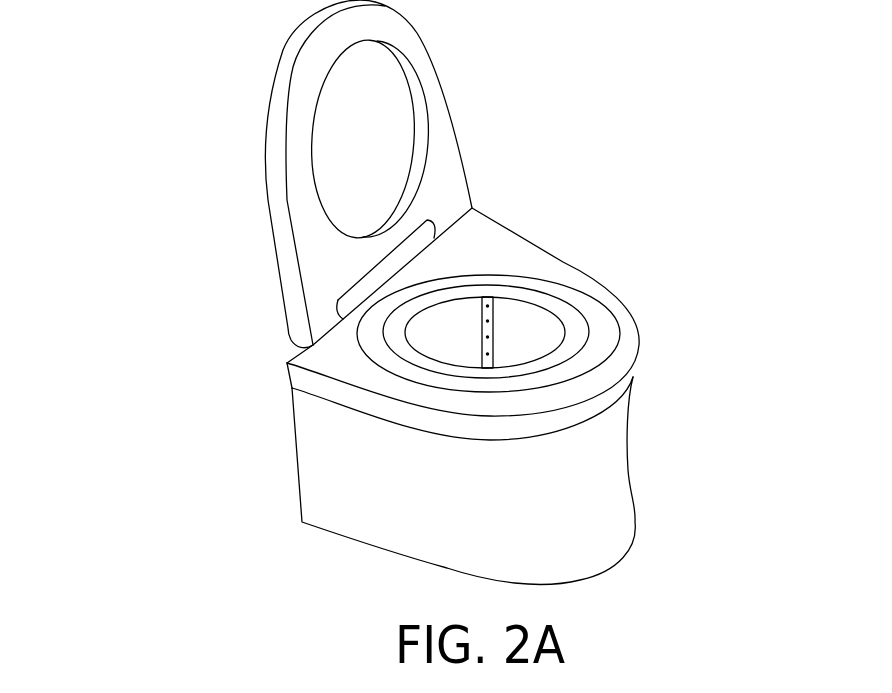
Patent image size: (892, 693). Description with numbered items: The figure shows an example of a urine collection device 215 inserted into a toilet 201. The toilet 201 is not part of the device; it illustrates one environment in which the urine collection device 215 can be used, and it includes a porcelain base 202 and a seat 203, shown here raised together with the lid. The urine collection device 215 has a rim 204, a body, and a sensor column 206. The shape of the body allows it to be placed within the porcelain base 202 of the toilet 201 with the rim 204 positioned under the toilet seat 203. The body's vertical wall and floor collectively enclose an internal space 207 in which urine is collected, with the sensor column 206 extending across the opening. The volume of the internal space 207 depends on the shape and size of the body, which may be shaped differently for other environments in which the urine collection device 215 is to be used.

The toilet 201 is at (588, 463).
The porcelain base 202 is at (612, 363).
The seat 203 is at (278, 110).
The rim 204 is at (513, 291).
The sensor column 206 is at (477, 308).
The internal space 207 is at (539, 323).
The urine collection device 215 is at (606, 331).